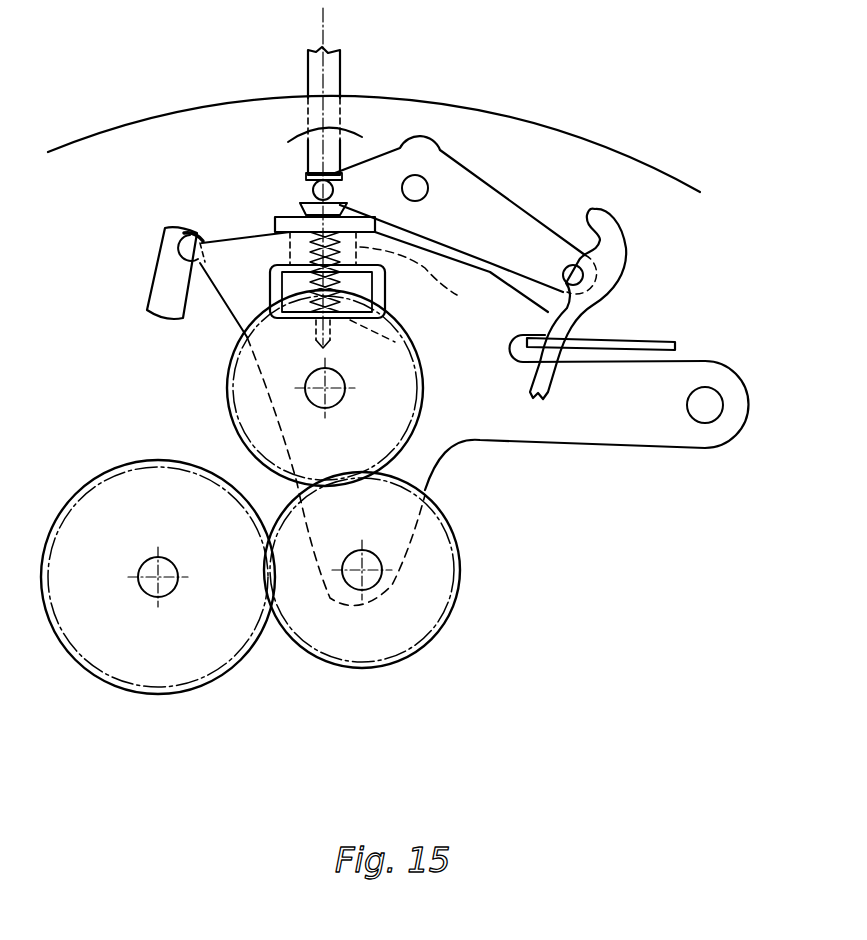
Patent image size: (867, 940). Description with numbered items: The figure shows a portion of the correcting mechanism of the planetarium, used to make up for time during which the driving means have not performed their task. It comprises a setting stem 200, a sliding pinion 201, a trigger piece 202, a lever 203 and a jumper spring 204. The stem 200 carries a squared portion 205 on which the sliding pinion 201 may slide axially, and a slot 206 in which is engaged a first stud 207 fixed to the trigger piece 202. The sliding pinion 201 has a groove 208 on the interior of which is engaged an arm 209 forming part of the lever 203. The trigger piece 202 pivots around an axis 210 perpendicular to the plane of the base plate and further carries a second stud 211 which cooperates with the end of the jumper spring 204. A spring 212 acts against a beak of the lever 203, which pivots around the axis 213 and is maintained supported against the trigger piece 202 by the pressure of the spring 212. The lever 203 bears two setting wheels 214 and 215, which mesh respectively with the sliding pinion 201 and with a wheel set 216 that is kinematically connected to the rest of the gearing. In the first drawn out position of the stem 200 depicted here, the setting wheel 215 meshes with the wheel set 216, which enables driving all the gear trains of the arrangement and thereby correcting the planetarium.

The setting stem 200 is at (342, 60).
The sliding pinion 201 is at (273, 228).
The trigger piece 202 is at (480, 169).
The lever 203 is at (474, 434).
The jumper spring 204 is at (607, 230).
The squared portion 205 is at (398, 340).
The slot 206 is at (307, 178).
The first stud 207 is at (313, 188).
The groove 208 is at (434, 281).
The arm 209 is at (300, 248).
The axis 210 is at (416, 180).
The second stud 211 is at (573, 264).
The spring 212 is at (647, 342).
The axis 213 is at (705, 412).
The setting wheel 214 is at (250, 415).
The setting wheel 215 is at (443, 582).
The wheel set 216 is at (113, 665).